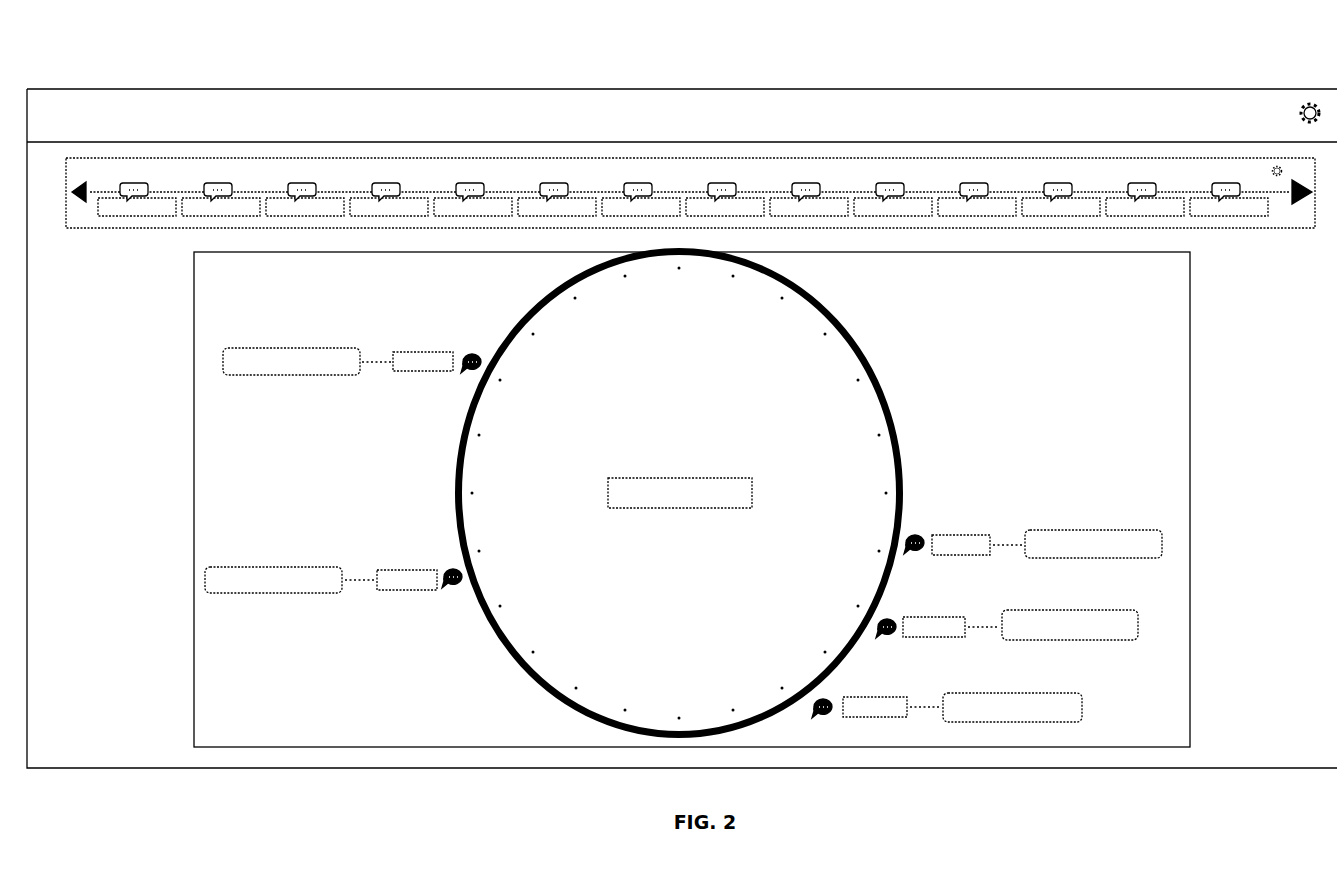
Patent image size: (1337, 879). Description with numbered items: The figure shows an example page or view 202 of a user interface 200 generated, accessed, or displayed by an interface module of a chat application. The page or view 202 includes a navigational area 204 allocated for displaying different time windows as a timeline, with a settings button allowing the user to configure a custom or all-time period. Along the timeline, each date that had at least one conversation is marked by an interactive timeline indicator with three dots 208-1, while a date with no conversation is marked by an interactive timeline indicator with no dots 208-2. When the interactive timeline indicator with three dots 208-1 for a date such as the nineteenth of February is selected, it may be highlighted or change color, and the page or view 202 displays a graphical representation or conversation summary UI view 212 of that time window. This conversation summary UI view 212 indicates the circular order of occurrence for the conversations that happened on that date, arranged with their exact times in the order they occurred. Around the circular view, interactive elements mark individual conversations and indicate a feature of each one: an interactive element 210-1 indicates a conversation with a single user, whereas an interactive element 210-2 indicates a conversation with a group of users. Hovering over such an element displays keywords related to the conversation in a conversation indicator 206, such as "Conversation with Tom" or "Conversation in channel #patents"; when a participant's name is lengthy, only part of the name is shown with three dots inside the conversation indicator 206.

The user interface 200 is at (114, 80).
The page or view 202 is at (94, 727).
The navigational area 204 is at (690, 208).
The conversation indicator 206 is at (270, 345).
The interactive timeline indicator with three dots 208-1 is at (556, 176).
The interactive timeline indicator with no dots 208-2 is at (808, 176).
The interactive element 210-1 is at (470, 345).
The interactive element 210-2 is at (453, 560).
The graphical representation or conversation summary UI view 212 is at (735, 500).